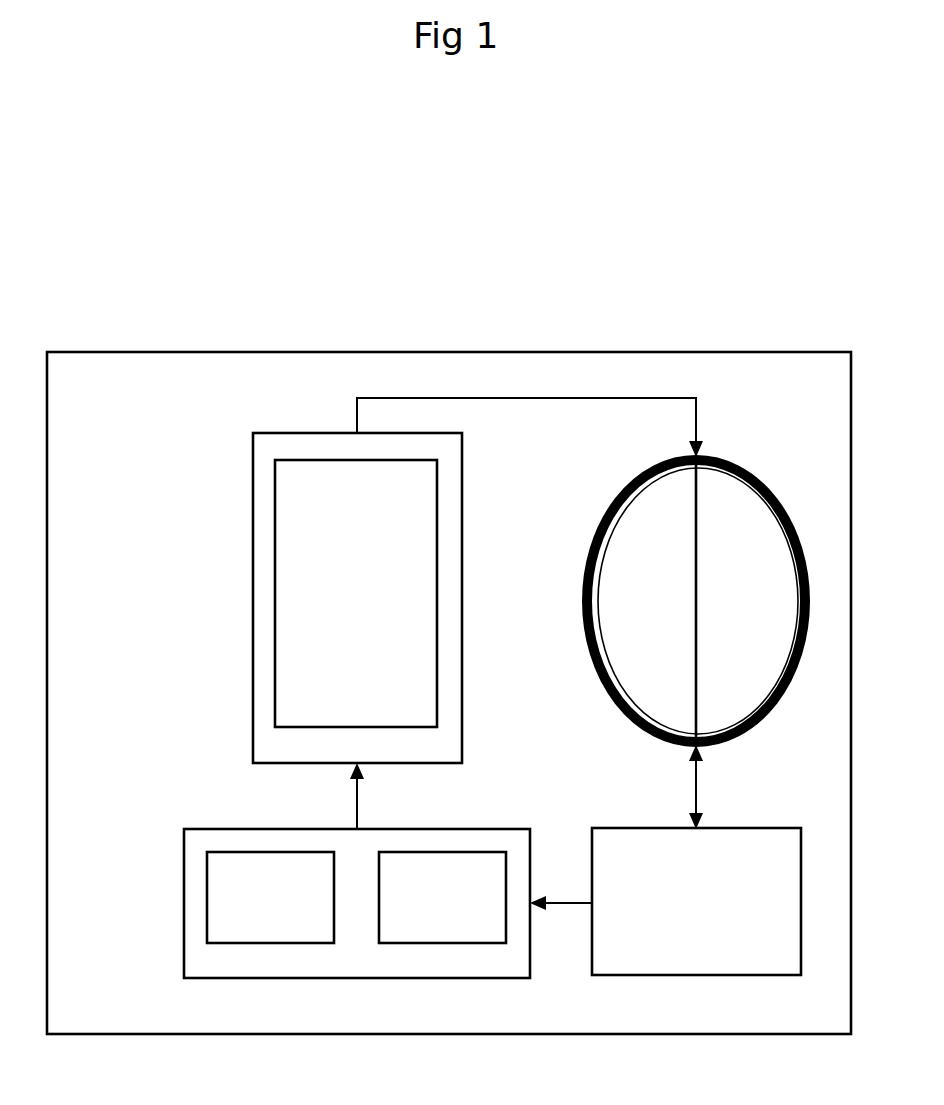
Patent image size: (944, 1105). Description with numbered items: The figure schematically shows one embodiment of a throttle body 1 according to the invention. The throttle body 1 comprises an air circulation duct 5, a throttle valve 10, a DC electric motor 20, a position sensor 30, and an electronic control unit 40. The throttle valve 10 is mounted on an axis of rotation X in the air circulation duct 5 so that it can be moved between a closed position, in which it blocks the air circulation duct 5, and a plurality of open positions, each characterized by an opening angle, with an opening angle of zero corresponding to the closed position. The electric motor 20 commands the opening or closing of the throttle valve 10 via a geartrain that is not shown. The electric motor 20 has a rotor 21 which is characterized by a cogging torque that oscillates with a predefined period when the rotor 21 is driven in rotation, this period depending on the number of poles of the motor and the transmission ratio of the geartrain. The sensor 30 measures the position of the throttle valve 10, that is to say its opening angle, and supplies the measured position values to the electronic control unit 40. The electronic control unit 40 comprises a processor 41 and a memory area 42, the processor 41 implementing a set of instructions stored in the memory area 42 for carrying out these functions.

The throttle body 1 is at (545, 352).
The air circulation duct 5 is at (646, 478).
The throttle valve 10 is at (610, 540).
The DC electric motor 20 is at (253, 612).
The rotor 21 is at (344, 608).
The position sensor 30 is at (679, 917).
The electronic control unit 40 is at (184, 897).
The processor 41 is at (254, 913).
The memory area 42 is at (424, 913).
The axis of rotation X is at (698, 508).